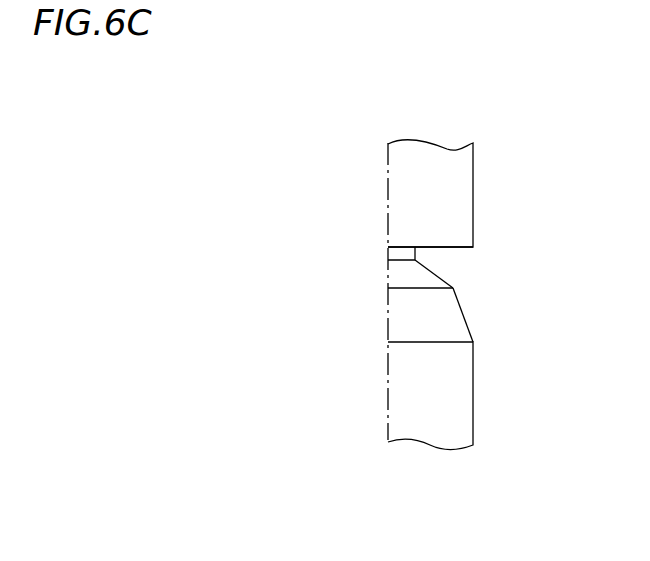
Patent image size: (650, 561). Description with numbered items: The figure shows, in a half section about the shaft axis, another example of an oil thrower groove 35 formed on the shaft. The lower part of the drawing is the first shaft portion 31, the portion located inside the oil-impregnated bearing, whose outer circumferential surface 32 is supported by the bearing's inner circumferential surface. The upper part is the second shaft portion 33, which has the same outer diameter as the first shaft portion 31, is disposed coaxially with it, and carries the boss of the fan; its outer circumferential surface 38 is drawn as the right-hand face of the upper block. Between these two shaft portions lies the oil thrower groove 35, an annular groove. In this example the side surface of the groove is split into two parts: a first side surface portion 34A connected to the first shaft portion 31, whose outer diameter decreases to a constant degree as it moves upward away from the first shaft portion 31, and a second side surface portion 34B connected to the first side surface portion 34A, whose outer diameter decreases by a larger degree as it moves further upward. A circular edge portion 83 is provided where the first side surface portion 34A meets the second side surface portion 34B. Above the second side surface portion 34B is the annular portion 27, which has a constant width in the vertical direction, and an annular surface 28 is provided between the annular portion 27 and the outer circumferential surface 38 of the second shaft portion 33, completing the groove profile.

The second shaft portion 33 is at (447, 147).
The outer circumferential surface 38 is at (473, 183).
The annular surface 28 is at (462, 250).
The annular portion 27 is at (407, 255).
The oil thrower groove 35 is at (390, 305).
The second side surface portion 34B is at (430, 282).
The circular edge portion 83 is at (453, 288).
The first side surface portion 34A is at (447, 326).
The outer circumferential surface 32 is at (473, 412).
The first shaft portion 31 is at (423, 443).